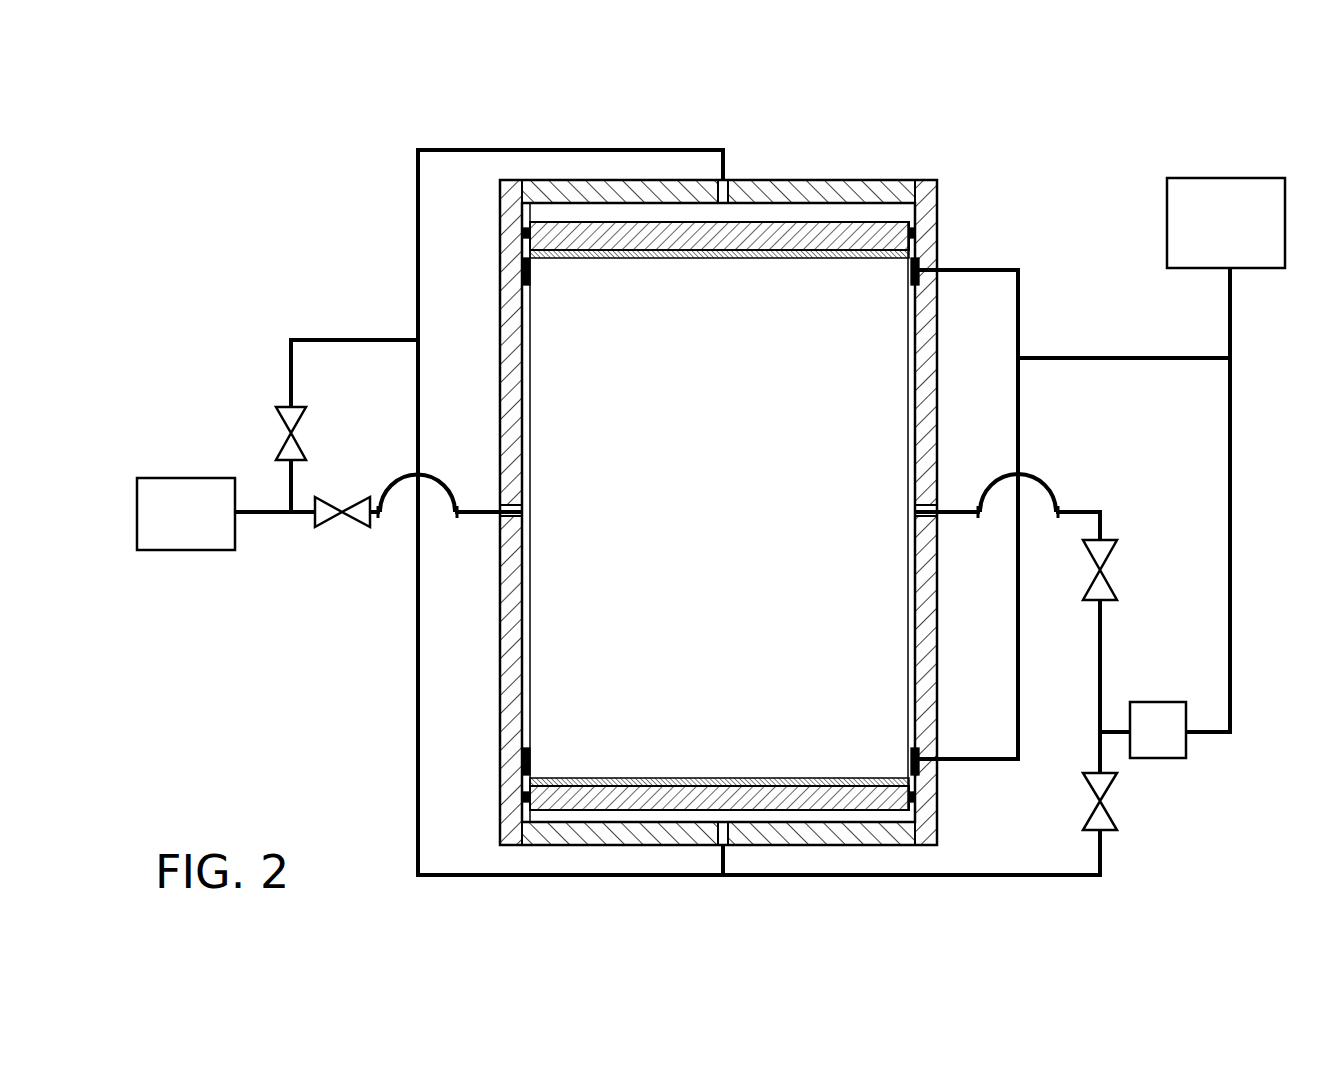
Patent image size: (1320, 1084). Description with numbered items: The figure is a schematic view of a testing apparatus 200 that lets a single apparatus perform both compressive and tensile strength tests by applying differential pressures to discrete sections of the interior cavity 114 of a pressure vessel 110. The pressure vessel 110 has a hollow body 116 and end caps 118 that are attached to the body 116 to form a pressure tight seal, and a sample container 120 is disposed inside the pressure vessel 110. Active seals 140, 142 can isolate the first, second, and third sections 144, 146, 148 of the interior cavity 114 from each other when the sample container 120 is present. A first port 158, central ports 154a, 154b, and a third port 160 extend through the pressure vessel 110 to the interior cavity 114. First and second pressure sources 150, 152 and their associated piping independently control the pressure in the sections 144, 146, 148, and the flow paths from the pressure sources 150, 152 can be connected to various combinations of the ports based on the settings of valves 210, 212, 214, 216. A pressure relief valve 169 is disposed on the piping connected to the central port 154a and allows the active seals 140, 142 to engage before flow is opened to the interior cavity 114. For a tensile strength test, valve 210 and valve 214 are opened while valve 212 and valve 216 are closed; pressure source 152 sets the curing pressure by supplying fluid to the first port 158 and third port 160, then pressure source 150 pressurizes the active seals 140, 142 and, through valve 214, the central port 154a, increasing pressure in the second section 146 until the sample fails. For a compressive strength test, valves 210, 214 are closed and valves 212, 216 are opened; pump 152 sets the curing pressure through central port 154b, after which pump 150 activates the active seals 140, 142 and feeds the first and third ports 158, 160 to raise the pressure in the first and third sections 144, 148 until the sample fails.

The testing apparatus 200 is at (306, 95).
The pressure vessel 110 is at (912, 184).
The interior cavity 114 is at (535, 212).
The hollow body 116 is at (945, 185).
The end caps 118 is at (785, 180).
The sample container 120 is at (530, 688).
The active seal 140 is at (935, 252).
The active seal 142 is at (930, 755).
The first section 144 is at (825, 215).
The second section 146 is at (935, 385).
The third section 148 is at (930, 790).
The first pressure source 150 is at (1215, 178).
The second pressure source 152 is at (190, 478).
The central port 154a is at (938, 503).
The central port 154b is at (500, 505).
The first port 158 is at (730, 180).
The third port 160 is at (728, 845).
The pressure relief valve 169 is at (1180, 758).
The valve 210 is at (283, 415).
The valve 212 is at (355, 527).
The valve 214 is at (1108, 555).
The valve 216 is at (1108, 795).